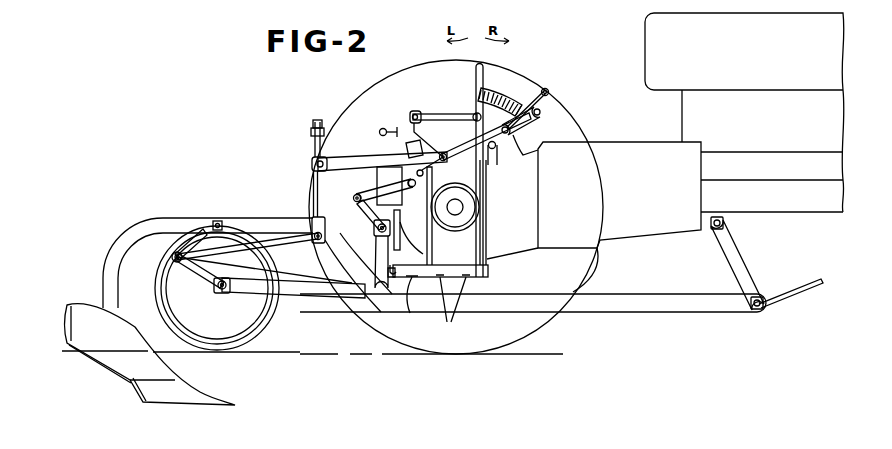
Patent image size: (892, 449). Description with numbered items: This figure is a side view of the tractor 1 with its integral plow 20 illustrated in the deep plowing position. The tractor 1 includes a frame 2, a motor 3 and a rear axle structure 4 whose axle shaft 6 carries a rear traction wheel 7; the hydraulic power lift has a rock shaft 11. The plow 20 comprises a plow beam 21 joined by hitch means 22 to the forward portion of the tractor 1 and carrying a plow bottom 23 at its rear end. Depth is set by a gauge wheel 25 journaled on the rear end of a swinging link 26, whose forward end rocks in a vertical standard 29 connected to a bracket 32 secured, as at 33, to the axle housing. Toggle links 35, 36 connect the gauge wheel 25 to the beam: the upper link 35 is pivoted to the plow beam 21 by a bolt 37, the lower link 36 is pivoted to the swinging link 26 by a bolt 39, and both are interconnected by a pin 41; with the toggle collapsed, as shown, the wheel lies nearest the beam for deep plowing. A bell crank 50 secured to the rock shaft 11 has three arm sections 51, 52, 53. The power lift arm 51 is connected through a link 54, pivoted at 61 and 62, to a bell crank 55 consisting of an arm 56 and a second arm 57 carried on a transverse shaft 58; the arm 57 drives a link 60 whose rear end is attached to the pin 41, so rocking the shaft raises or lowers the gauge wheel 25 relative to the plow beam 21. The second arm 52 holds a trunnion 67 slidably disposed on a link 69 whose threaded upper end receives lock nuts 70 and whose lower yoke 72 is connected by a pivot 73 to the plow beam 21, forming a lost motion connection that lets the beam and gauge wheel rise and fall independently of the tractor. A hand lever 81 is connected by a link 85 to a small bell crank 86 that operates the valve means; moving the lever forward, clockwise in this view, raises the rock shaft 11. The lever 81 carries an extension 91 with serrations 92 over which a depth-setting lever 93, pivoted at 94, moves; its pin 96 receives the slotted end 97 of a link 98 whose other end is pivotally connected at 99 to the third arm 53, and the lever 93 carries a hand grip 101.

The tractor 1 is at (792, 231).
The frame 2 is at (823, 181).
The motor 3 is at (768, 152).
The rear axle structure 4 is at (478, 229).
The axle shaft 6 is at (454, 212).
The rear traction wheel 7 is at (397, 80).
The rock shaft 11 is at (397, 127).
The plow 20 is at (141, 219).
The plow beam 21 is at (258, 218).
The hitch means 22 is at (745, 268).
The plow bottom 23 is at (133, 340).
The gauge wheel 25 is at (272, 322).
The swinging link 26 is at (312, 292).
The vertical standard 29 is at (393, 272).
The bracket 32 is at (412, 305).
The securing means 33 is at (450, 306).
The toggle link 35 is at (200, 233).
The toggle link 36 is at (197, 266).
The bolt 37 is at (218, 221).
The bolt 39 is at (222, 293).
The pin 41 is at (172, 257).
The bell crank 50 is at (353, 135).
The power lift arm 51 is at (424, 174).
The second arm 52 is at (366, 152).
The third arm section 53 is at (416, 113).
The link 54 is at (372, 188).
The bell crank 55 is at (360, 228).
The arm 56 is at (362, 215).
The second arm 57 is at (368, 248).
The transverse shaft 58 is at (389, 229).
The link 60 is at (307, 275).
The pivot 61 is at (412, 188).
The pivot 62 is at (354, 199).
The trunnion 67 is at (311, 164).
The link 69 is at (313, 190).
The lock nuts 70 is at (311, 132).
The yoke 72 is at (312, 224).
The pivot 73 is at (314, 238).
The hand lever 81 is at (474, 76).
The link 85 is at (449, 114).
The bell crank 86 is at (384, 129).
The extension 91 is at (501, 86).
The serrations 92 is at (486, 123).
The lever 93 is at (547, 90).
The pivot 94 is at (494, 152).
The pin 96 is at (524, 155).
The slotted end 97 is at (524, 95).
The link 98 is at (470, 146).
The pivotal connection 99 is at (447, 158).
The hand grip 101 is at (553, 95).